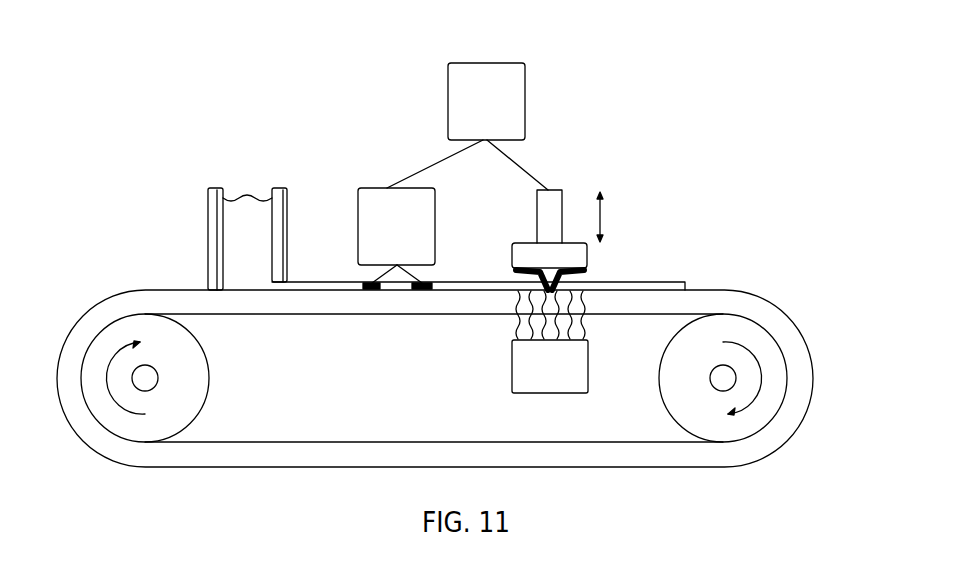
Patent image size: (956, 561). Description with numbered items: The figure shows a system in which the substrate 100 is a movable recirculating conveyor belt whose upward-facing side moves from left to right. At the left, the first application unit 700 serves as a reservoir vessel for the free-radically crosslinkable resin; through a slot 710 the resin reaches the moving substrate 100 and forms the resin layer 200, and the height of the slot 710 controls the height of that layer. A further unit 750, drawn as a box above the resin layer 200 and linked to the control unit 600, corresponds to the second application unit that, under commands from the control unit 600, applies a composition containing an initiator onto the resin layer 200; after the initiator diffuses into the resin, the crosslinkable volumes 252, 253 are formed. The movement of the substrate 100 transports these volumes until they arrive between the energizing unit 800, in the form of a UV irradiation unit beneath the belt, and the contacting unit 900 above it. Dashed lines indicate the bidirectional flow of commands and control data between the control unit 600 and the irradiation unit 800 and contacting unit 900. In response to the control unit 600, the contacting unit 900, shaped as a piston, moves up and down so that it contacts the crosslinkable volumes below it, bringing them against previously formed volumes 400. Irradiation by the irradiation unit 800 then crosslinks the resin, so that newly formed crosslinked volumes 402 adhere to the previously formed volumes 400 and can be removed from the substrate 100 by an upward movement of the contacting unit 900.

The substrate 100 is at (158, 290).
The resin layer 200 is at (315, 282).
The crosslinkable volume 252 is at (426, 289).
The crosslinkable volume 253 is at (374, 289).
The previously formed volume 400 is at (588, 276).
The newly formed crosslinked volume 402 is at (515, 276).
The control unit 600 is at (448, 105).
The first application unit 700 is at (215, 188).
The slot 710 is at (283, 290).
The supply unit 750 is at (385, 188).
The energizing unit 800 is at (548, 393).
The contacting unit 900 is at (562, 190).